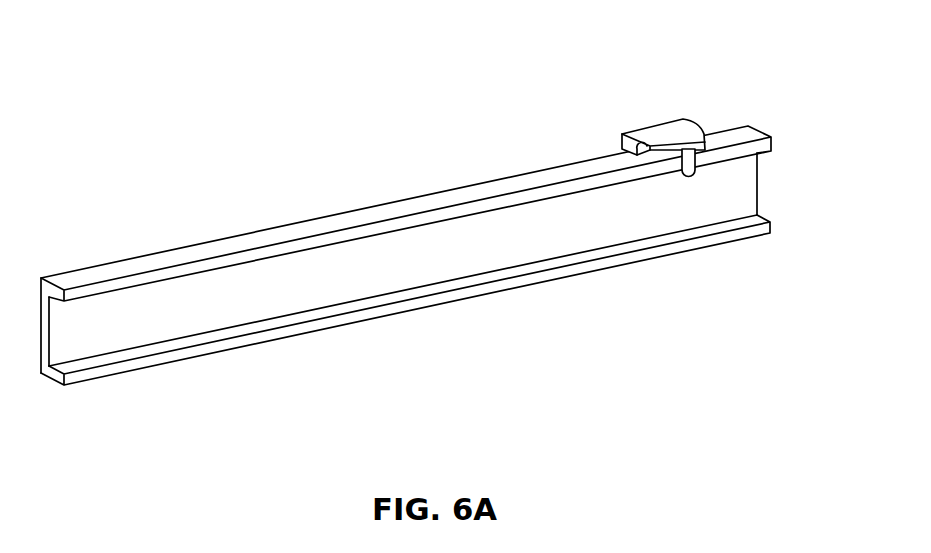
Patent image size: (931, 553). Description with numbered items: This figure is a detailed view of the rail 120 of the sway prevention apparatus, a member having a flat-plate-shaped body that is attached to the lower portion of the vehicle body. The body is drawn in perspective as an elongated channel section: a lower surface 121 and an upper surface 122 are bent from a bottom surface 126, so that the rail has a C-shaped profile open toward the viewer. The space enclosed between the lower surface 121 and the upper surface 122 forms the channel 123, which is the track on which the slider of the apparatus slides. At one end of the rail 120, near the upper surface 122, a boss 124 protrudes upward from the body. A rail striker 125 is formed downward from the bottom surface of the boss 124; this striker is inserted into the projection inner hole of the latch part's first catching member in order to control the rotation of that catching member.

The rail 120 is at (406, 262).
The lower surface 121 is at (328, 322).
The upper surface 122 is at (220, 250).
The channel 123 is at (136, 317).
The boss 124 is at (727, 104).
The rail striker 125 is at (697, 173).
The bottom surface 126 is at (478, 248).